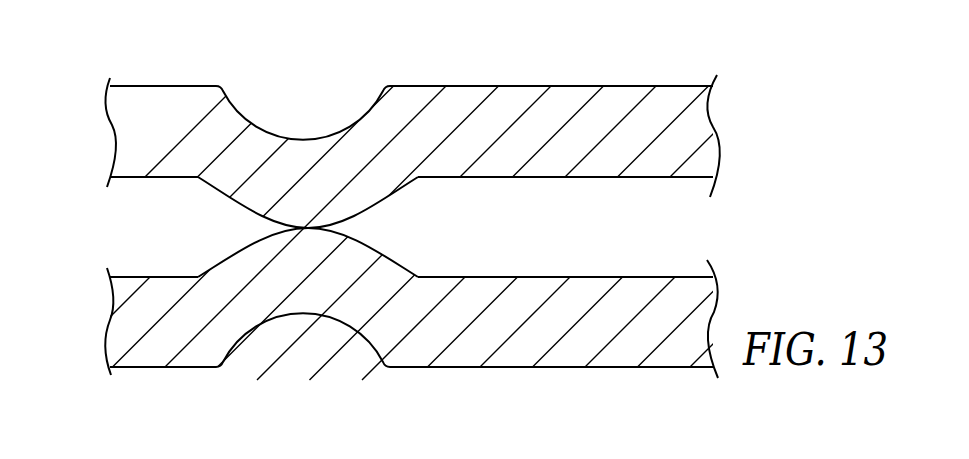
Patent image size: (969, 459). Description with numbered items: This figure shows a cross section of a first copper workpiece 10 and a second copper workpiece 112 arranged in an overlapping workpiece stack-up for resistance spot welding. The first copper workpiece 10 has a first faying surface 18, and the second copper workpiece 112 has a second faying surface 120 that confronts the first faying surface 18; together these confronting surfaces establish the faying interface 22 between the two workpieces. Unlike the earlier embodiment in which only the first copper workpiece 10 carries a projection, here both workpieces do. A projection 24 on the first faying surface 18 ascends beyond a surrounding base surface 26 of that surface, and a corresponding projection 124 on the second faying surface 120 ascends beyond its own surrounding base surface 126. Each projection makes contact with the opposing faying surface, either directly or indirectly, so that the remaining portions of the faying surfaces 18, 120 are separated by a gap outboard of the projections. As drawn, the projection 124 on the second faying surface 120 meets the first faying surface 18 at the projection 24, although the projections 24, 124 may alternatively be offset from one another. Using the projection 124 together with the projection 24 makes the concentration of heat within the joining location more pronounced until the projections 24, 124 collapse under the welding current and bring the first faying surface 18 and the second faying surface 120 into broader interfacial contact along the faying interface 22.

The first copper workpiece 10 is at (137, 85).
The second copper workpiece 112 is at (147, 368).
The faying interface 22 is at (122, 220).
The projection 24 is at (368, 190).
The projection 124 is at (300, 272).
The surrounding base surface 26 is at (173, 177).
The surrounding base surface 126 is at (175, 275).
The first faying surface 18 is at (583, 178).
The second faying surface 120 is at (567, 277).